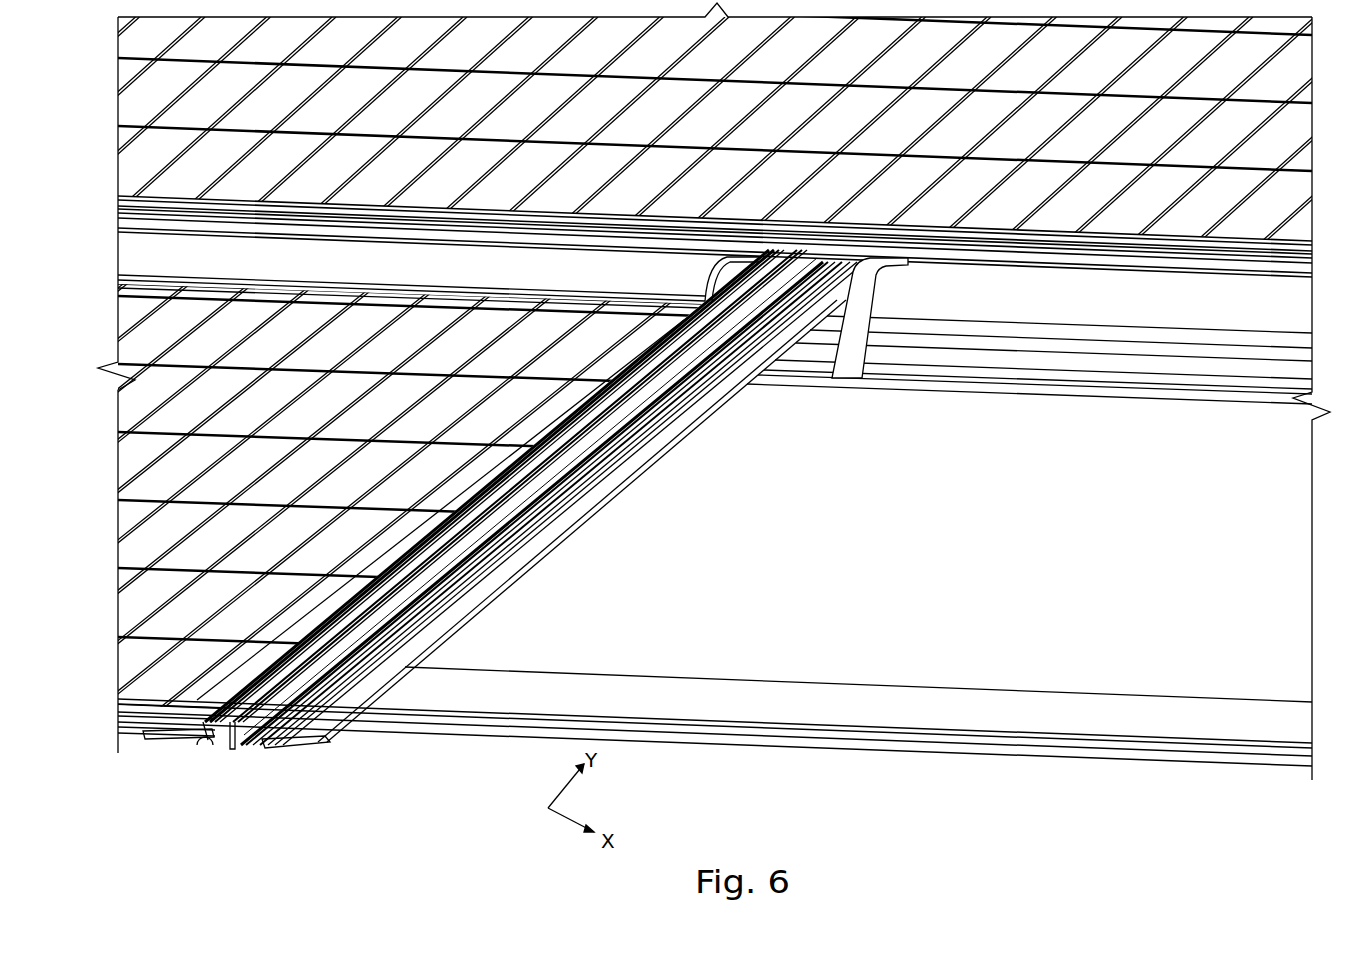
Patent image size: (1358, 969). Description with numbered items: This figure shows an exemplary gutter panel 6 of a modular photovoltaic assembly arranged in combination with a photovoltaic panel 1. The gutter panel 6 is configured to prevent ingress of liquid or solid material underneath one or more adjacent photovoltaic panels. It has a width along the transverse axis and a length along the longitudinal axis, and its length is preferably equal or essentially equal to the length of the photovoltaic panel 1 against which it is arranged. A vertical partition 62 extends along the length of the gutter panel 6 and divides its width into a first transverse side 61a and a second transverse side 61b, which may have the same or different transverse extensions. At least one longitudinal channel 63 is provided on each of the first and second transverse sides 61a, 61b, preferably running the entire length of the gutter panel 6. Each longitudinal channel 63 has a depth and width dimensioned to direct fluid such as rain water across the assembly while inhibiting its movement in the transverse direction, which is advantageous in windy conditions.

The photovoltaic panel 1 is at (562, 404).
The gutter panel 6 is at (603, 503).
The longitudinal channel 63 is at (363, 698).
The first transverse side 61a is at (197, 744).
The vertical partition 62 is at (241, 750).
The second transverse side 61b is at (284, 745).